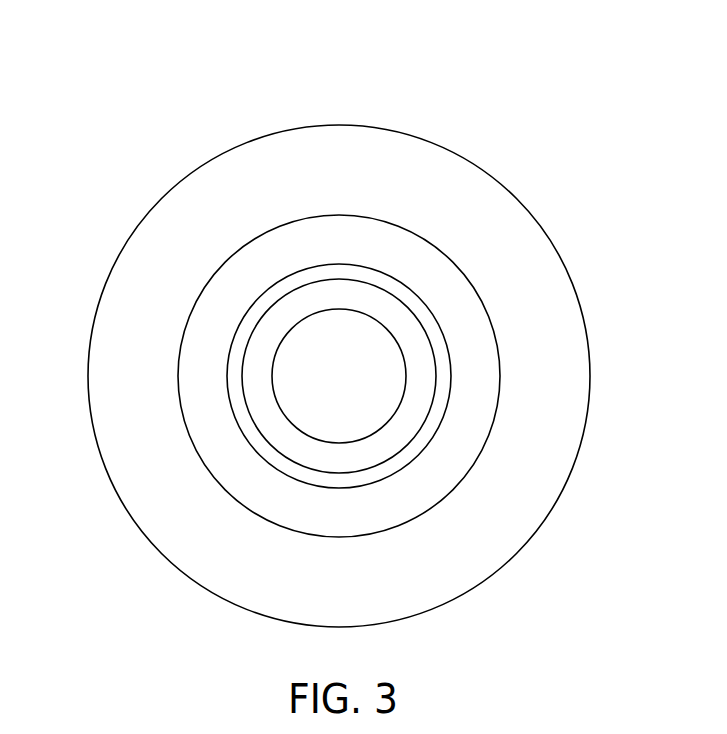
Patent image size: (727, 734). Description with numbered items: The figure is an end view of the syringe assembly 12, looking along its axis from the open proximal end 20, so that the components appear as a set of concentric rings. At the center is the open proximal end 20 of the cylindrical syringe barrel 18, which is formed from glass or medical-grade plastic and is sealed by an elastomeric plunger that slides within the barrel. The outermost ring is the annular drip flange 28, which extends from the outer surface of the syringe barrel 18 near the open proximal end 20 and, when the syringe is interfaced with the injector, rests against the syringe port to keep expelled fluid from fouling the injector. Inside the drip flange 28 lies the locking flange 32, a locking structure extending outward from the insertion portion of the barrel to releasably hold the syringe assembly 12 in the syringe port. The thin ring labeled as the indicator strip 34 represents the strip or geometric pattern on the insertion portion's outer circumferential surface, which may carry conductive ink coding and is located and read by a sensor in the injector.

The syringe assembly 12 is at (531, 114).
The syringe barrel 18 is at (422, 373).
The open proximal end 20 is at (298, 375).
The drip flange 28 is at (532, 475).
The locking flange 32 is at (398, 500).
The indicator strip 34 is at (338, 273).